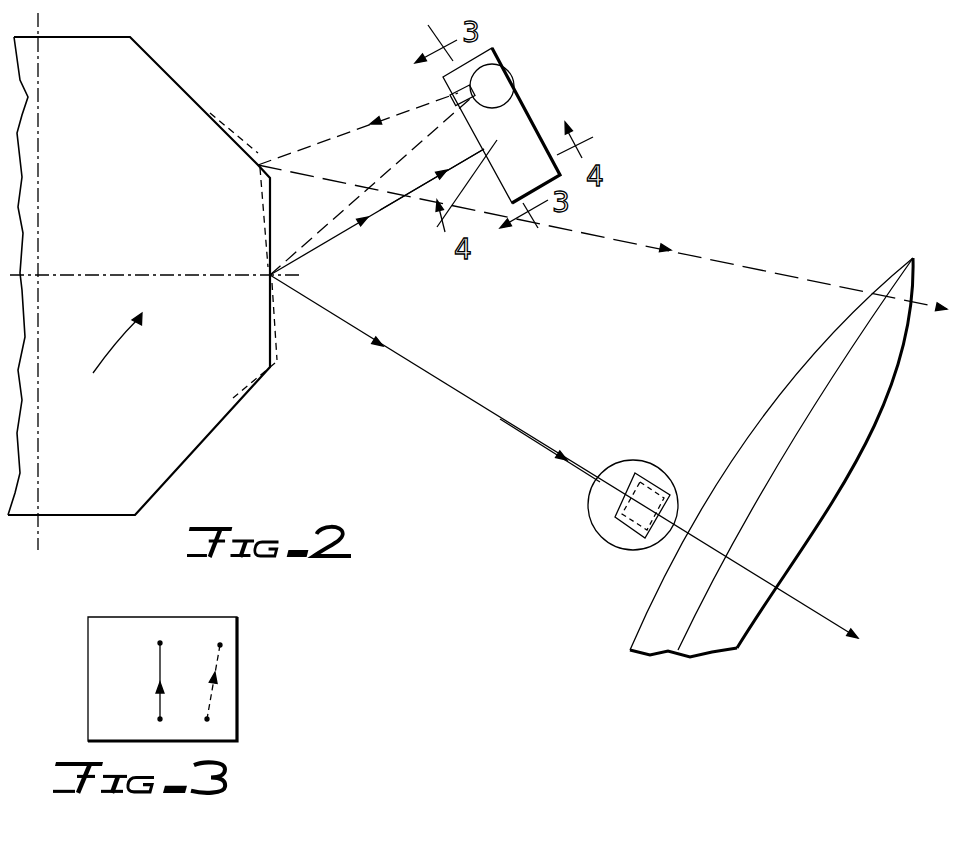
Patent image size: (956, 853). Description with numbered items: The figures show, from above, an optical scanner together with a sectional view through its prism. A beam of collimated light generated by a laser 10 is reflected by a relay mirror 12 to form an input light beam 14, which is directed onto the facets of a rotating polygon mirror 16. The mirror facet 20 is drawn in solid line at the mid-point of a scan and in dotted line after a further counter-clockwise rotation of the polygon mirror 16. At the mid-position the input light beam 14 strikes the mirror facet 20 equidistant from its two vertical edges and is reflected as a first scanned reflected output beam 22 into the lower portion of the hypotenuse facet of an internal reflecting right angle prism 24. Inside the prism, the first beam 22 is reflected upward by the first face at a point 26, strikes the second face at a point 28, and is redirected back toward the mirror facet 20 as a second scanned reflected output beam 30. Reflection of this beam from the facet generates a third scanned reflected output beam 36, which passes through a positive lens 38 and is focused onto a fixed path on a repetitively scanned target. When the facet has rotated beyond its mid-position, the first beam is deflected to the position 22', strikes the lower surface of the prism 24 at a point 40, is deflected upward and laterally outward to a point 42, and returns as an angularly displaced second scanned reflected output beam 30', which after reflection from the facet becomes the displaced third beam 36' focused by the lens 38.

In FIG. 2, the laser 10 is at (610, 539).
In FIG. 2, the relay mirror 12 is at (649, 490).
In FIG. 2, the input light beam 14 is at (558, 460).
In FIG. 2, the rotating polygon mirror 16 is at (133, 202).
In FIG. 2, the mirror facet 20 is at (254, 184).
In FIG. 2, the first scanned reflected output beam 22 is at (377, 212).
In FIG. 2, the first scanned reflected output beam at second position 22' is at (371, 186).
In FIG. 2, the internal reflecting right angle prism 24 is at (541, 127).
In FIG. 3, the internal reflecting right angle prism 24 is at (163, 617).
In FIG. 3, the first reflection point 26 is at (158, 719).
In FIG. 3, the second reflection point 28 is at (158, 643).
In FIG. 2, the second scanned reflected output beam 30 is at (432, 173).
In FIG. 2, the angularly displaced second scanned reflected output beam 30' is at (358, 120).
In FIG. 2, the third scanned reflected output beam 36 is at (564, 456).
In FIG. 2, the third scanned reflected output beam at displaced position 36' is at (602, 238).
In FIG. 2, the positive lens 38 is at (770, 420).
In FIG. 2, the displaced first reflection point 40 is at (516, 99).
In FIG. 3, the displaced first reflection point 40 is at (209, 719).
In FIG. 2, the displaced second reflection point 42 is at (499, 65).
In FIG. 3, the displaced second reflection point 42 is at (222, 645).